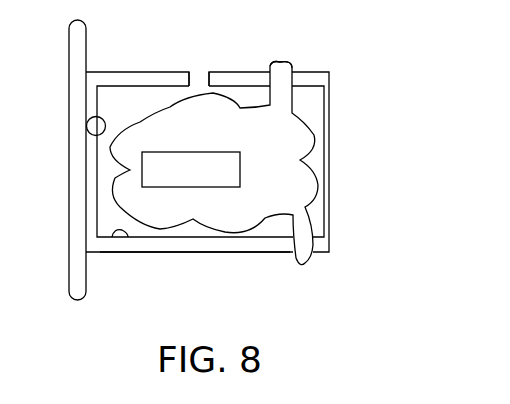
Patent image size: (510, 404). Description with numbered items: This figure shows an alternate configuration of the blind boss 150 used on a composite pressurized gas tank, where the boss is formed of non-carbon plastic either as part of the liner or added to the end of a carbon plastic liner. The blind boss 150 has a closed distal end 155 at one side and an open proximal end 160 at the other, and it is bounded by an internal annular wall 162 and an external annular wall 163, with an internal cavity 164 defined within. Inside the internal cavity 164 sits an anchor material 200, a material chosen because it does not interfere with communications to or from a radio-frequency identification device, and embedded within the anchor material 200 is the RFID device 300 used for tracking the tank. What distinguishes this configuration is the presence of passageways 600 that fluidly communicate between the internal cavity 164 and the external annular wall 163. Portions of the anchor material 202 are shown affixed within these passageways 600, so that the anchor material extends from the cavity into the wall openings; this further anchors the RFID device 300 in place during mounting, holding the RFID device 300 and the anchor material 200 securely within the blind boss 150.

The blind boss 150 is at (117, 62).
The closed distal end 155 is at (88, 118).
The open proximal end 160 is at (330, 173).
The internal annular wall 162 is at (124, 237).
The external annular wall 163 is at (193, 253).
The internal cavity 164 is at (138, 110).
The anchor material 200 is at (215, 138).
The portions of the anchor material 202 is at (286, 70).
The RFID device 300 is at (193, 183).
The passageways 600 is at (198, 65).